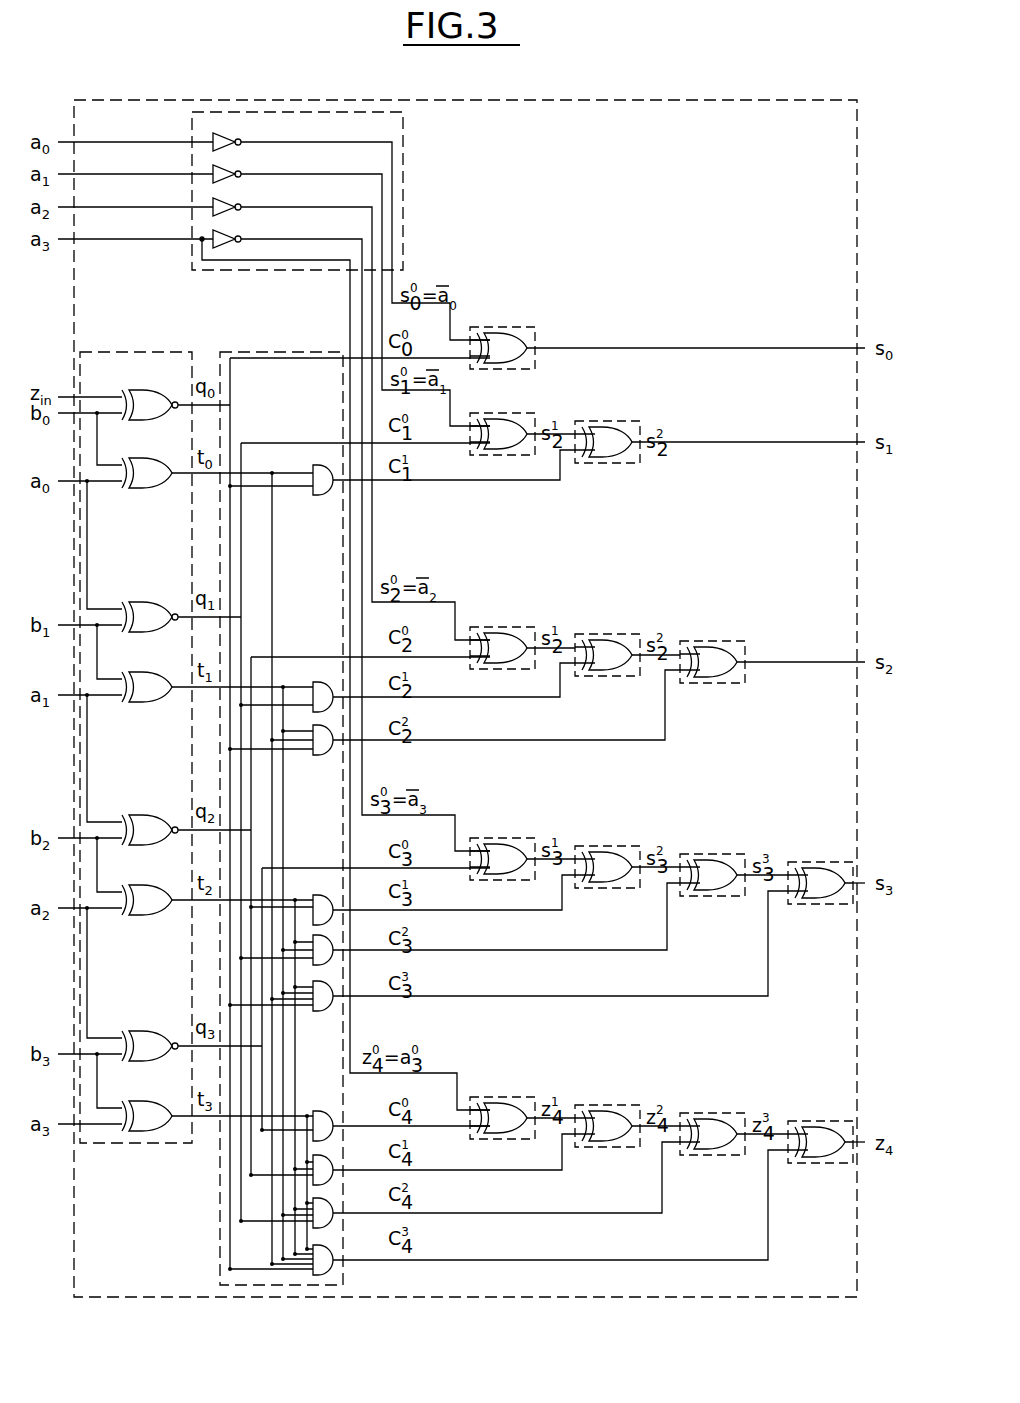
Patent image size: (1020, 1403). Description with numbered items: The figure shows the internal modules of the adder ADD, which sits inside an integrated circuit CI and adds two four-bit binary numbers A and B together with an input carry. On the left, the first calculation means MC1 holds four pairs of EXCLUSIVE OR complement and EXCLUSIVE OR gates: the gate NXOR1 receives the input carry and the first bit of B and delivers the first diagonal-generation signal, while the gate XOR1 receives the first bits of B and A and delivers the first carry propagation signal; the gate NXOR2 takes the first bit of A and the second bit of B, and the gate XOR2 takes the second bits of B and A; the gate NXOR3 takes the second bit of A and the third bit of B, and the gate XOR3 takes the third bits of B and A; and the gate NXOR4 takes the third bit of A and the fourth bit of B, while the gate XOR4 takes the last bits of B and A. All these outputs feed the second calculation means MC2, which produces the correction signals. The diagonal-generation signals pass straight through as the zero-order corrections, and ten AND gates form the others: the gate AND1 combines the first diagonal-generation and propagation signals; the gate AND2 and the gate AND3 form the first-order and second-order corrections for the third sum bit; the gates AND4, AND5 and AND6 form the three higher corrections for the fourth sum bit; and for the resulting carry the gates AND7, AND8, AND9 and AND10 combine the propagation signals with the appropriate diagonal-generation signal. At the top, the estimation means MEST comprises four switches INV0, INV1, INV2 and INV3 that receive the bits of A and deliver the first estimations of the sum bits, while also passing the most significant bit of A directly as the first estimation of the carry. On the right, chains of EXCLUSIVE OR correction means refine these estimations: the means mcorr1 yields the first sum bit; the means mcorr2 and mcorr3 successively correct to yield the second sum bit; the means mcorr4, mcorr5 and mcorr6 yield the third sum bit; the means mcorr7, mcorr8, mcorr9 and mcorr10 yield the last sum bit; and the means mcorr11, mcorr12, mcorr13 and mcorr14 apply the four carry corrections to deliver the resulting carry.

The adder ADD is at (465, 681).
The integrated circuit CI is at (709, 72).
The estimation means MEST is at (404, 185).
The first calculation means MC1 is at (136, 728).
The second calculation means MC2 is at (281, 799).
The switch INV0 is at (351, 229).
The switch INV1 is at (351, 288).
The switch INV2 is at (351, 411).
The switch INV3 is at (351, 533).
The EXCLUSIVE OR complement gate NXOR1 is at (142, 390).
The EXCLUSIVE OR complement gate NXOR2 is at (142, 602).
The EXCLUSIVE OR complement gate NXOR3 is at (142, 815).
The EXCLUSIVE OR complement gate NXOR4 is at (142, 1031).
The EXCLUSIVE OR gate XOR1 is at (144, 458).
The EXCLUSIVE OR gate XOR2 is at (144, 672).
The EXCLUSIVE OR gate XOR3 is at (144, 885).
The EXCLUSIVE OR gate XOR4 is at (144, 1101).
The logic AND gate AND1 is at (444, 486).
The logic AND gate AND2 is at (444, 699).
The logic AND gate AND3 is at (496, 725).
The logic AND gate AND4 is at (444, 912).
The logic AND gate AND5 is at (496, 938).
The logic AND gate AND6 is at (550, 964).
The logic AND gate AND7 is at (403, 1138).
The logic AND gate AND8 is at (444, 1171).
The logic AND gate AND9 is at (496, 1197).
The logic AND gate AND10 is at (550, 1223).
The correction means mcorr1 is at (666, 331).
The correction means mcorr2 is at (521, 417).
The correction means mcorr3 is at (718, 425).
The correction means mcorr4 is at (521, 631).
The correction means mcorr5 is at (626, 638).
The correction means mcorr6 is at (771, 645).
The correction means mcorr7 is at (521, 843).
The correction means mcorr8 is at (626, 850).
The correction means mcorr9 is at (732, 858).
The correction means mcorr10 is at (819, 900).
The correction means mcorr11 is at (521, 1102).
The correction means mcorr12 is at (626, 1109).
The correction means mcorr13 is at (732, 1117).
The correction means mcorr14 is at (819, 1160).